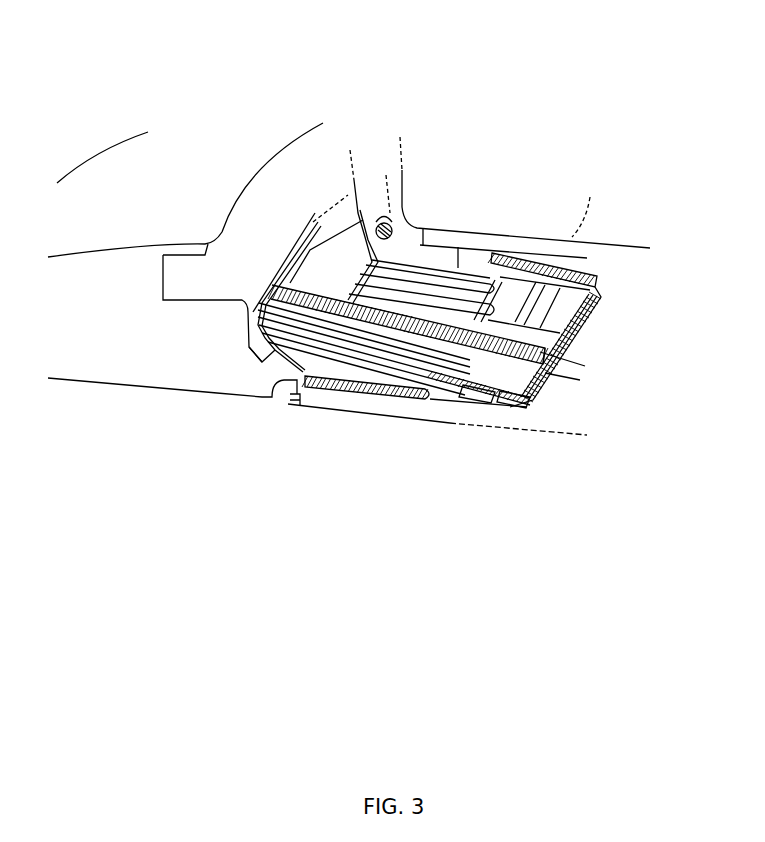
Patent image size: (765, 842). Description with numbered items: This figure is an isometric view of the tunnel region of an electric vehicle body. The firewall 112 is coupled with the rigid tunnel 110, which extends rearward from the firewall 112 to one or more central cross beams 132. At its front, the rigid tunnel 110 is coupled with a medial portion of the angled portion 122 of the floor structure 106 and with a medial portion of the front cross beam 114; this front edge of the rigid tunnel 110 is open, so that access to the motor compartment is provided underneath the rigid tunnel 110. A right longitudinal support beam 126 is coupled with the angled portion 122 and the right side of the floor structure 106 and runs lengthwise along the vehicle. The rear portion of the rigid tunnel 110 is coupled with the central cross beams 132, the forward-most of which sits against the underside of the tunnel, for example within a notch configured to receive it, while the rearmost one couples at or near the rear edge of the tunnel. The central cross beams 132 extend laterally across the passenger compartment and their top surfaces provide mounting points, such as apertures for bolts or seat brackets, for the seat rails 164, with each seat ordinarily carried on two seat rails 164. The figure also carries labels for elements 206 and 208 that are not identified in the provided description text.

The floor structure 106 is at (455, 268).
The rigid tunnel 110 is at (302, 353).
The firewall 112 is at (280, 222).
The front cross beam 114 is at (310, 230).
The angled portion 122 is at (260, 362).
The right longitudinal support beam 126 is at (543, 237).
The central cross beams 132 is at (510, 403).
The seat rails 164 is at (541, 348).
The divider panel 206 is at (508, 275).
The side flange 208 is at (570, 302).